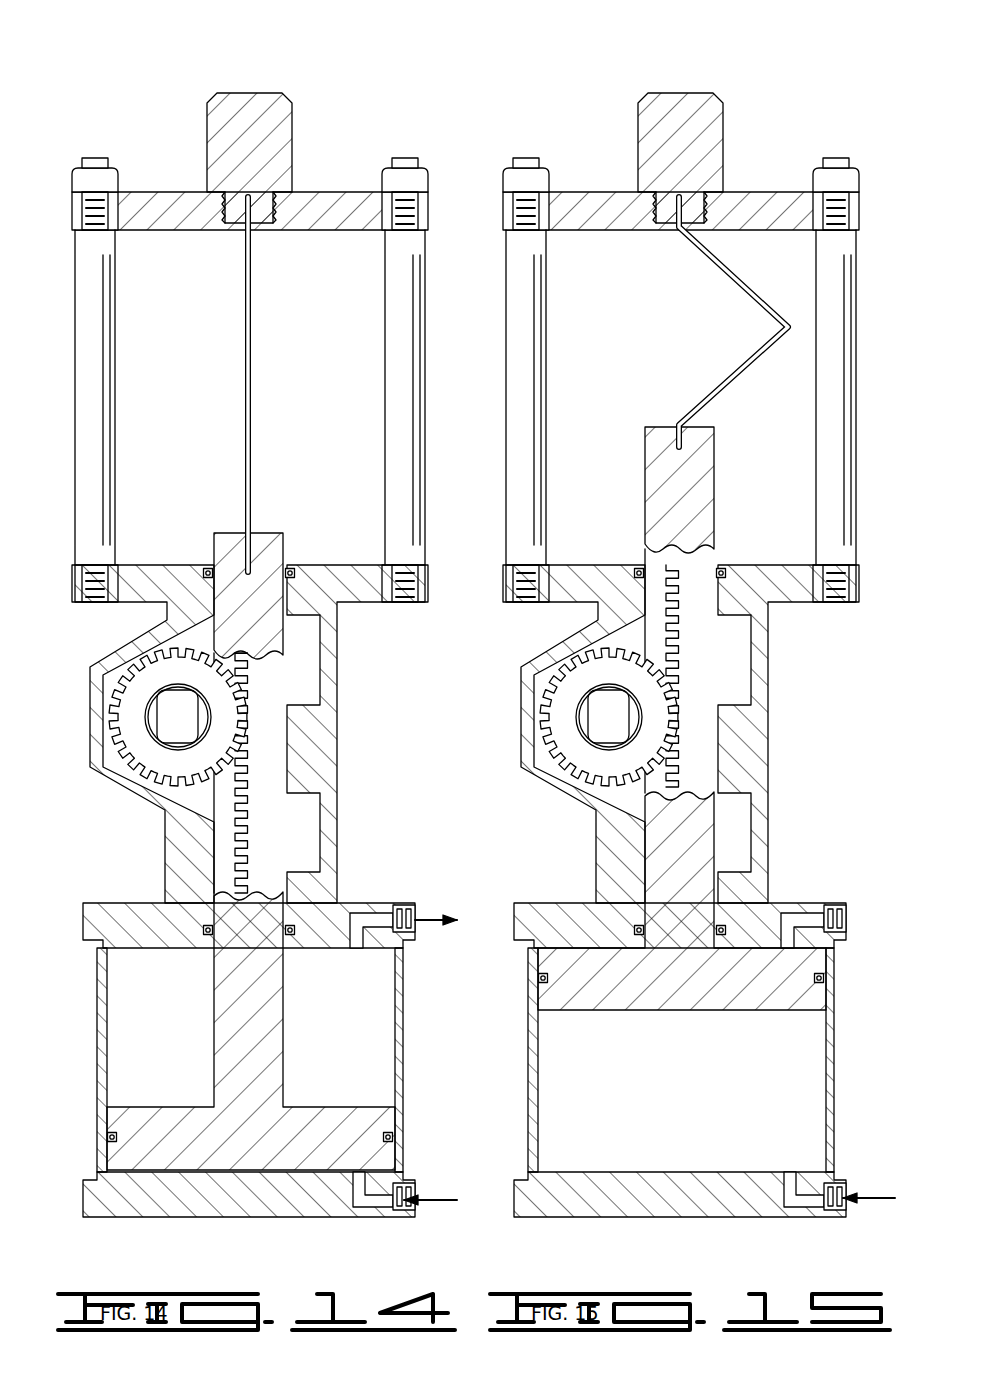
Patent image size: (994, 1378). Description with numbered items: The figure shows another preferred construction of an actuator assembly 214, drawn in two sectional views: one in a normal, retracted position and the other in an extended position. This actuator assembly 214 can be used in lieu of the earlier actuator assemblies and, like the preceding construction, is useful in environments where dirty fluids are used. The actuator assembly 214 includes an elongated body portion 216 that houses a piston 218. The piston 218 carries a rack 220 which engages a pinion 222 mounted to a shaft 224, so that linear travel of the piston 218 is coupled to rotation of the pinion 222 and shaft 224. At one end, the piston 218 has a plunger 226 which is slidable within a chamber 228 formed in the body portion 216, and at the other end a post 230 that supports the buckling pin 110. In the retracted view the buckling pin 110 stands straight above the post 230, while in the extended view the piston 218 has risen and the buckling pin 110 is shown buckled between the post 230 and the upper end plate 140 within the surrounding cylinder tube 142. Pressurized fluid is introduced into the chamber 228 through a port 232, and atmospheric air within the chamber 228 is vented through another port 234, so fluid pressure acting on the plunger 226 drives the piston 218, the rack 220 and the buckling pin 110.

In FIG. 14, the buckling pin 110 is at (245, 372).
In FIG. 15, the buckling pin 110 is at (704, 322).
In FIG. 14, the top end plate 140 is at (312, 188).
In FIG. 15, the top end plate 140 is at (681, 347).
In FIG. 14, the cylinder tube 142 is at (393, 292).
In FIG. 15, the cylinder tube 142 is at (681, 397).
In FIG. 14, the actuator assembly 214 is at (166, 82).
In FIG. 15, the actuator assembly 214 is at (666, 648).
In FIG. 14, the body portion 216 is at (330, 720).
In FIG. 15, the body portion 216 is at (681, 756).
In FIG. 14, the piston 218 is at (253, 835).
In FIG. 15, the piston 218 is at (657, 756).
In FIG. 14, the rack 220 is at (242, 810).
In FIG. 15, the rack 220 is at (567, 671).
In FIG. 14, the pinion 222 is at (185, 776).
In FIG. 15, the pinion 222 is at (568, 736).
In FIG. 14, the shaft 224 is at (165, 710).
In FIG. 15, the shaft 224 is at (539, 717).
In FIG. 14, the plunger 226 is at (315, 1130).
In FIG. 15, the plunger 226 is at (682, 939).
In FIG. 14, the chamber 228 is at (165, 1045).
In FIG. 15, the chamber 228 is at (643, 1082).
In FIG. 14, the post 230 is at (220, 538).
In FIG. 15, the post 230 is at (637, 490).
In FIG. 14, the port 232 is at (405, 1182).
In FIG. 15, the port 232 is at (831, 1224).
In FIG. 14, the port 234 is at (395, 906).
In FIG. 15, the port 234 is at (849, 887).